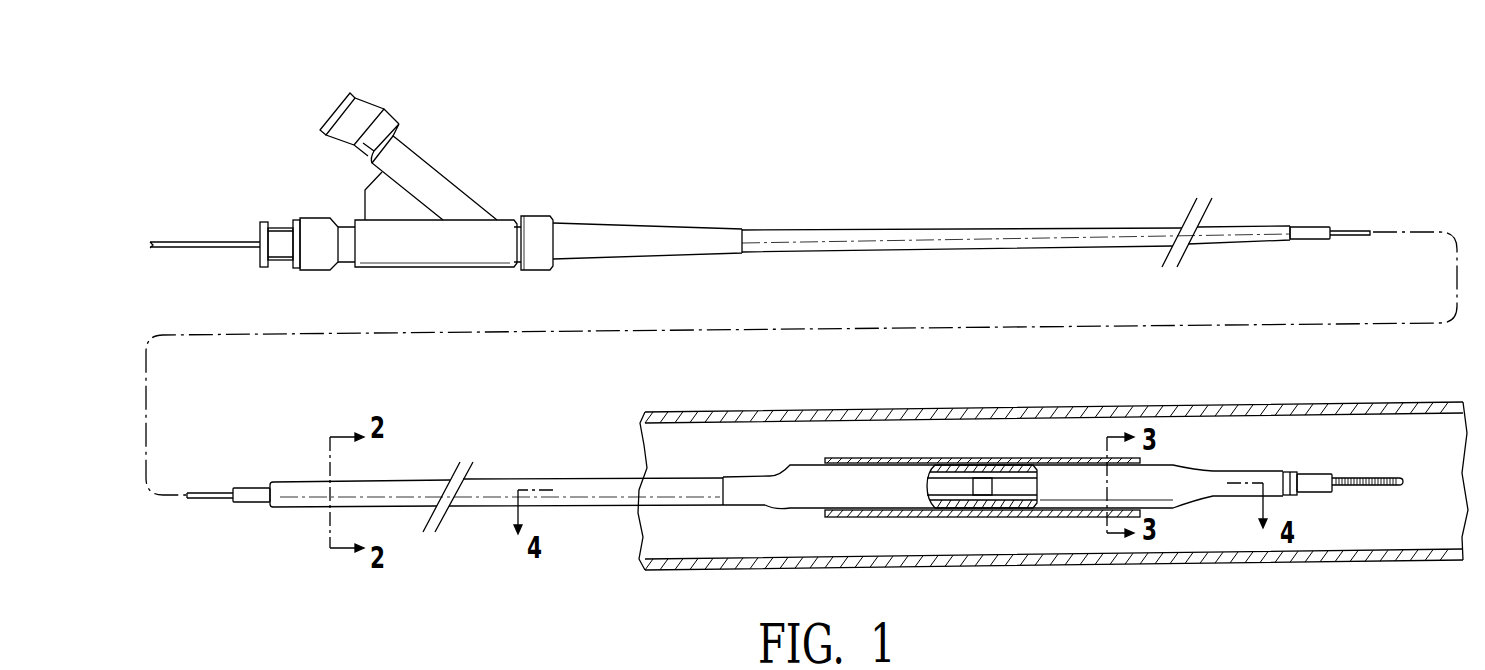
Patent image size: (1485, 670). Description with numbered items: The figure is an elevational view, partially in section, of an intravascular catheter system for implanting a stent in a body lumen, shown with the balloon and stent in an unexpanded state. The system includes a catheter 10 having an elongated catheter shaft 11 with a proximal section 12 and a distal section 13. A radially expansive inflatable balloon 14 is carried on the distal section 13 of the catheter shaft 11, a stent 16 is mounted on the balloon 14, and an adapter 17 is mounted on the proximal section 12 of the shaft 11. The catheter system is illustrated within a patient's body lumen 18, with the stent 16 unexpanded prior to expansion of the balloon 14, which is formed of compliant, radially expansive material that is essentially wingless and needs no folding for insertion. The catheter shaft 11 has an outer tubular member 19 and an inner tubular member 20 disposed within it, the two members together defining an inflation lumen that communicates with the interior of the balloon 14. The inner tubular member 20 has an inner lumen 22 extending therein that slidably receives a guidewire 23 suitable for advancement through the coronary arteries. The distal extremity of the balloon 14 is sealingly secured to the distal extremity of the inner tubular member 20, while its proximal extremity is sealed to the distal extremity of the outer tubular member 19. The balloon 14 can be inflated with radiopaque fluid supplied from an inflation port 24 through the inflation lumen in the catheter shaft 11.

The catheter 10 is at (1122, 173).
The catheter shaft 11 is at (1023, 245).
The proximal section 12 is at (780, 230).
The distal section 13 is at (625, 477).
The inflatable balloon 14 is at (770, 468).
The stent 16 is at (990, 458).
The adapter 17 is at (363, 218).
The body lumen 18 is at (662, 415).
The outer tubular member 19 is at (1240, 232).
The inner tubular member 20 is at (1313, 227).
The inner lumen 22 is at (1338, 487).
The guidewire 23 is at (230, 238).
The inflation port 24 is at (420, 152).